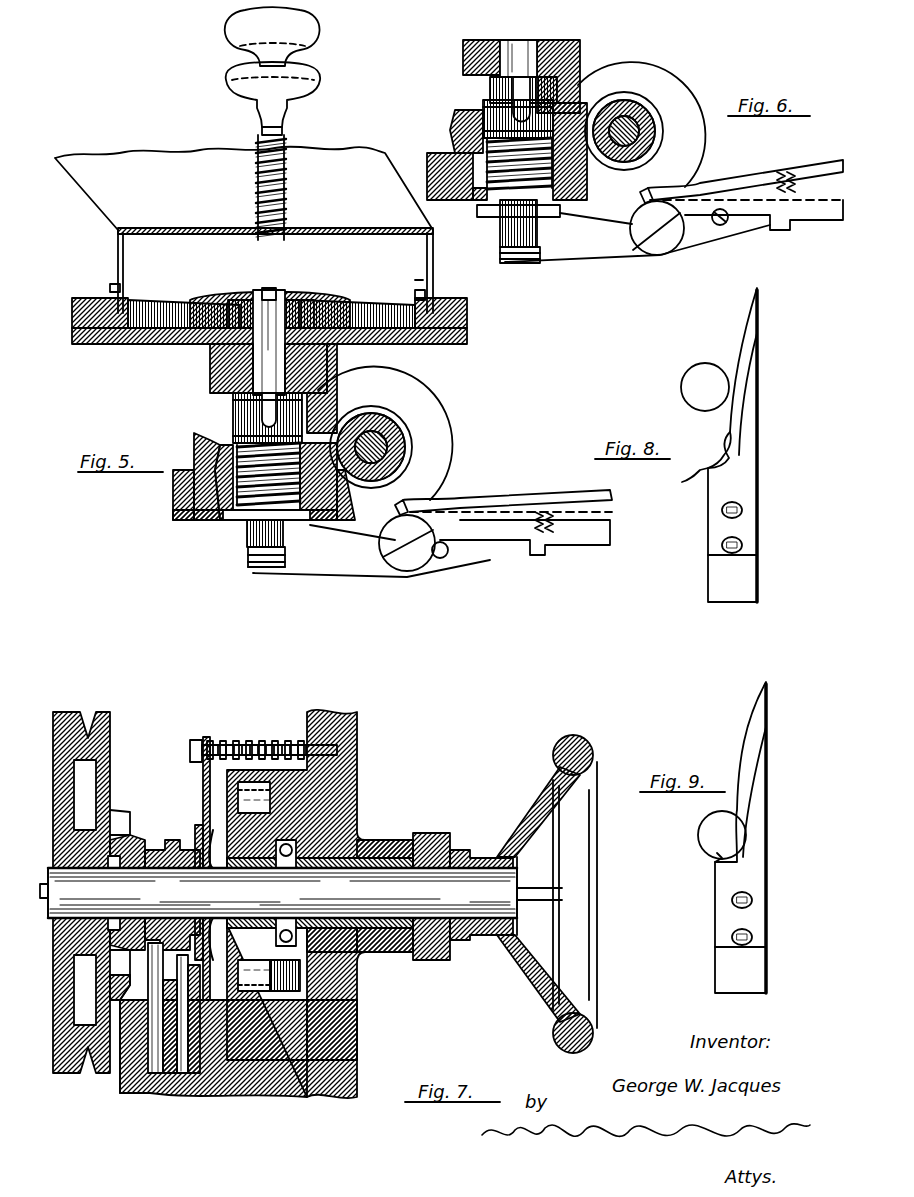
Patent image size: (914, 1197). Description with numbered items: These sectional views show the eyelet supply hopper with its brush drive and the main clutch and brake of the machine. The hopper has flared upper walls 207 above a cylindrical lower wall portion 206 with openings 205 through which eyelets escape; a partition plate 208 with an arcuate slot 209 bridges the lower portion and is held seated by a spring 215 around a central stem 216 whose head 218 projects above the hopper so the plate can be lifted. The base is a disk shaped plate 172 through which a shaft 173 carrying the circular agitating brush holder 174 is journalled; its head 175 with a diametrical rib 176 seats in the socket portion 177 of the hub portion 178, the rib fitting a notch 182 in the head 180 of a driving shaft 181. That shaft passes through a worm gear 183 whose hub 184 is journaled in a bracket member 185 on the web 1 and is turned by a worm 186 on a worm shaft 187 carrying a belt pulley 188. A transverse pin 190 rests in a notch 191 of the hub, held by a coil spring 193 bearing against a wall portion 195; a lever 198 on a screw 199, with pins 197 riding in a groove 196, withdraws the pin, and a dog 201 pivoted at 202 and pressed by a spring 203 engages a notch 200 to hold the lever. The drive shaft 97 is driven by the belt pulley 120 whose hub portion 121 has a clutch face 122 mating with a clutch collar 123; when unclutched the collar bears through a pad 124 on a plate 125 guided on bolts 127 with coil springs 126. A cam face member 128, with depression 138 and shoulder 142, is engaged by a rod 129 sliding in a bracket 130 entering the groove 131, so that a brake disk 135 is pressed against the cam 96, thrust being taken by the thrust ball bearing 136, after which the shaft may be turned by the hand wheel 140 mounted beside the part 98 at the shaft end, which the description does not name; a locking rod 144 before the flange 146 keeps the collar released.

In FIG. 7, the web 1 is at (355, 720).
In FIG. 7, the cam 96 is at (302, 790).
In FIG. 7, the drive shaft 97 is at (395, 880).
In FIG. 7, the collar 98 is at (455, 842).
In FIG. 7, the belt pulley 120 is at (95, 694).
In FIG. 7, the hub portion 121 is at (115, 812).
In FIG. 7, the clutch face 122 is at (168, 790).
In FIG. 7, the clutch collar 123 is at (115, 1075).
In FIG. 7, the pad 124 is at (200, 800).
In FIG. 7, the plate 125 is at (205, 742).
In FIG. 7, the coil springs 126 is at (282, 745).
In FIG. 7, the bolts 127 is at (258, 745).
In FIG. 8, the cam face member 128 is at (750, 442).
In FIG. 9, the cam face member 128 is at (757, 842).
In FIG. 8, the rod 129 is at (702, 368).
In FIG. 9, the rod 129 is at (698, 840).
In FIG. 7, the rod 129 is at (160, 1080).
In FIG. 7, the bracket 130 is at (245, 1078).
In FIG. 7, the groove 131 is at (162, 850).
In FIG. 7, the brake disk 135 is at (205, 737).
In FIG. 7, the thrust ball bearing 136 is at (330, 842).
In FIG. 8, the depression 138 is at (740, 458).
In FIG. 9, the depression 138 is at (745, 862).
In FIG. 7, the hand wheel 140 is at (585, 730).
In FIG. 8, the shoulder 142 is at (695, 472).
In FIG. 9, the shoulder 142 is at (716, 860).
In FIG. 7, the locking rod 144 is at (184, 1080).
In FIG. 7, the flange 146 is at (195, 1080).
In FIG. 5, the disk shaped plate 172 is at (467, 336).
In FIG. 5, the shaft 173 is at (265, 310).
In FIG. 6, the shaft 173 is at (510, 55).
In FIG. 5, the circular agitating brush holder 174 is at (336, 298).
In FIG. 5, the head 175 is at (212, 372).
In FIG. 5, the rib 176 is at (300, 410).
In FIG. 6, the rib 176 is at (492, 95).
In FIG. 5, the socket portion 177 is at (327, 370).
In FIG. 5, the hub portion 178 is at (300, 314).
In FIG. 6, the hub portion 178 is at (465, 46).
In FIG. 5, the head 180 is at (232, 424).
In FIG. 6, the head 180 is at (550, 112).
In FIG. 5, the driving shaft 181 is at (260, 535).
In FIG. 5, the notch 182 is at (245, 420).
In FIG. 6, the notch 182 is at (457, 120).
In FIG. 5, the worm gear 183 is at (195, 518).
In FIG. 6, the worm gear 183 is at (447, 140).
In FIG. 5, the hub 184 is at (250, 560).
In FIG. 5, the bracket member 185 is at (176, 497).
In FIG. 6, the bracket member 185 is at (445, 200).
In FIG. 5, the worm 186 is at (405, 450).
In FIG. 6, the worm 186 is at (655, 143).
In FIG. 5, the worm shaft 187 is at (372, 447).
In FIG. 6, the worm shaft 187 is at (625, 130).
In FIG. 5, the belt pulley 188 is at (412, 388).
In FIG. 6, the belt pulley 188 is at (675, 75).
In FIG. 5, the transverse pin 190 is at (283, 530).
In FIG. 6, the transverse pin 190 is at (540, 215).
In FIG. 5, the notch 191 is at (300, 525).
In FIG. 6, the notch 191 is at (560, 220).
In FIG. 5, the coil spring 193 is at (330, 500).
In FIG. 5, the wall portion 195 is at (325, 577).
In FIG. 5, the groove 196 is at (268, 574).
In FIG. 6, the groove 196 is at (575, 262).
In FIG. 5, the pins 197 is at (252, 580).
In FIG. 6, the pins 197 is at (515, 265).
In FIG. 5, the lever 198 is at (375, 575).
In FIG. 6, the lever 198 is at (625, 258).
In FIG. 5, the screw 199 is at (430, 560).
In FIG. 6, the screw 199 is at (675, 250).
In FIG. 5, the notch 200 is at (440, 500).
In FIG. 6, the notch 200 is at (645, 200).
In FIG. 5, the dog 201 is at (500, 503).
In FIG. 6, the dog 201 is at (760, 180).
In FIG. 5, the pivot 202 is at (490, 555).
In FIG. 6, the pivot 202 is at (730, 233).
In FIG. 5, the spring 203 is at (560, 520).
In FIG. 6, the spring 203 is at (797, 185).
In FIG. 5, the openings 205 is at (442, 305).
In FIG. 6, the openings 205 is at (445, 305).
In FIG. 5, the cylindrical lower wall portion 206 is at (428, 258).
In FIG. 6, the cylindrical lower wall portion 206 is at (420, 262).
In FIG. 5, the flared hopper walls 207 is at (80, 195).
In FIG. 5, the partition plate 208 is at (216, 228).
In FIG. 5, the arcuate slot 209 is at (150, 228).
In FIG. 5, the spring 215 is at (288, 185).
In FIG. 5, the central stem 216 is at (287, 140).
In FIG. 5, the head 218 is at (322, 88).